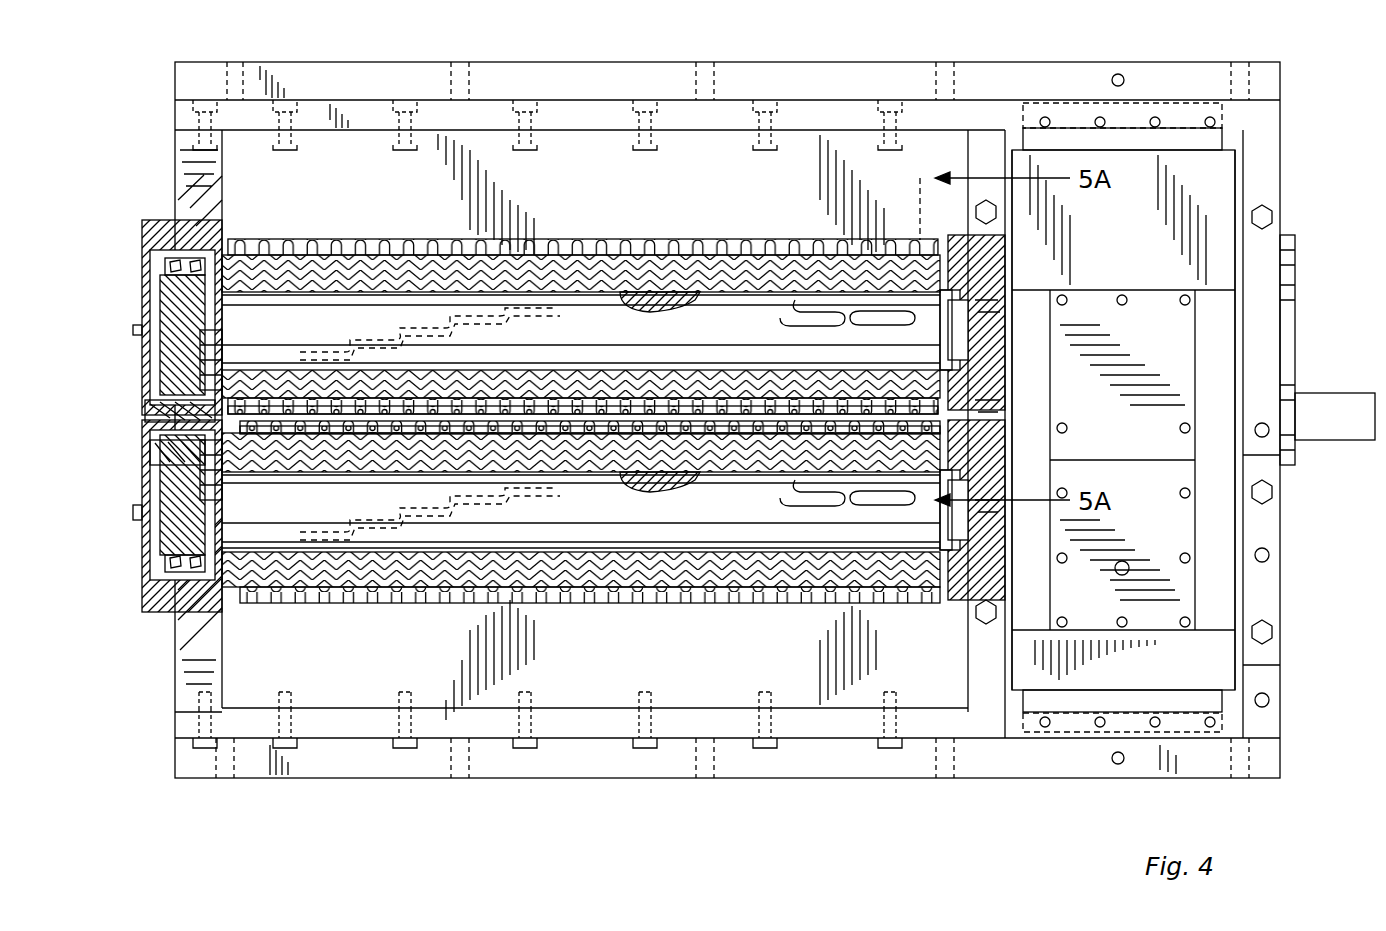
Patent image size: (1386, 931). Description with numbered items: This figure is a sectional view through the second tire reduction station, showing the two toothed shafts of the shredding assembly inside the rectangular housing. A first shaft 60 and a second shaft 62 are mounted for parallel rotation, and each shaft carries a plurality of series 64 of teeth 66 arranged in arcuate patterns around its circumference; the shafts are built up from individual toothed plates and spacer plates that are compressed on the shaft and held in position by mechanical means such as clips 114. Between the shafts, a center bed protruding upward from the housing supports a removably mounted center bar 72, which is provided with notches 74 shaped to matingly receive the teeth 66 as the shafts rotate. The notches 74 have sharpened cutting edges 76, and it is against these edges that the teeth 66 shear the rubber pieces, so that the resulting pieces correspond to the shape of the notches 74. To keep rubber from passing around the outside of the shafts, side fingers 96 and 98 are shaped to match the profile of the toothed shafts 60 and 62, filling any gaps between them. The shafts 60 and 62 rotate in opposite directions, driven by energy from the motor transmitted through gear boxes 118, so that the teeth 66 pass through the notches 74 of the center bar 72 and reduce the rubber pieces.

The first shaft 60 is at (734, 334).
The second shaft 62 is at (754, 512).
The series of teeth 64 is at (505, 318).
The teeth 66 is at (241, 240).
The center bar 72 is at (237, 432).
The notches 74 is at (152, 463).
The sharpened cutting edges 76 is at (152, 412).
The side finger 96 is at (656, 200).
The side finger 98 is at (609, 661).
The clips 114 is at (226, 590).
The gear boxes 118 is at (1218, 590).